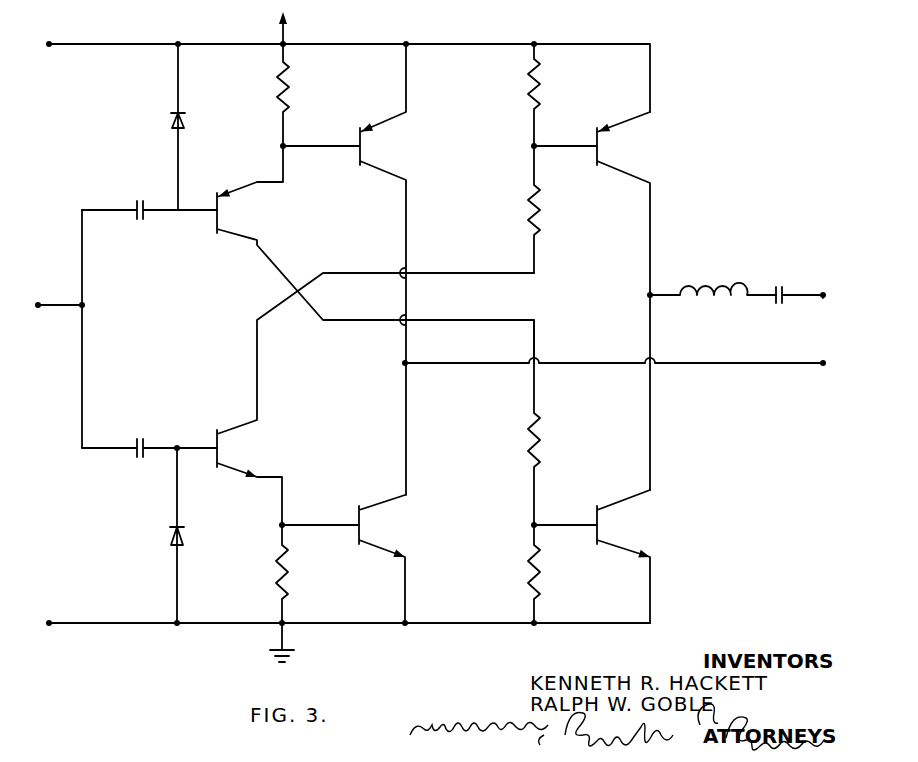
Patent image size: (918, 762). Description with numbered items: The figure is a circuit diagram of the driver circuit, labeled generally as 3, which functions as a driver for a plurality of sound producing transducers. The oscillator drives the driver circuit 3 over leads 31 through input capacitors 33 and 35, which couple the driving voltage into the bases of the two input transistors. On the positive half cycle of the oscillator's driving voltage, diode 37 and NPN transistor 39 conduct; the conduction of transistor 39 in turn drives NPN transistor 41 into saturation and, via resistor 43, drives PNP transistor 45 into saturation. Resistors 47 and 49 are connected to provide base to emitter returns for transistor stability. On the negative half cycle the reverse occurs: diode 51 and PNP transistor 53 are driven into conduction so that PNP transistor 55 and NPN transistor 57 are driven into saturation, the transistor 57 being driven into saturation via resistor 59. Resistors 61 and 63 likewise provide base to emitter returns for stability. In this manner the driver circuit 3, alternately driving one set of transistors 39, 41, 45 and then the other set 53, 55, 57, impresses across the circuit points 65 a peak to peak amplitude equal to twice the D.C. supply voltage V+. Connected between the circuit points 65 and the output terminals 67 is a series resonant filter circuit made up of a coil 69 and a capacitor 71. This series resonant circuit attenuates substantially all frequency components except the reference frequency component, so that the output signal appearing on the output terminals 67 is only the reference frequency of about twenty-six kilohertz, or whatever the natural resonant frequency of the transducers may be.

The power amplifier circuit 3 is at (88, 138).
The leads 31 is at (128, 18).
The input capacitor 33 is at (136, 219).
The input capacitor 35 is at (136, 438).
The diode 37 is at (175, 110).
The NPN transistor 39 is at (221, 448).
The NPN transistor 41 is at (363, 527).
The resistor 43 is at (538, 216).
The PNP transistor 45 is at (600, 150).
The resistor 47 is at (278, 580).
The resistor 49 is at (528, 92).
The diode 51 is at (172, 536).
The PNP transistor 53 is at (221, 214).
The PNP transistor 55 is at (363, 149).
The NPN transistor 57 is at (602, 528).
The resistor 59 is at (540, 442).
The resistor 61 is at (290, 108).
The resistor 63 is at (538, 574).
The circuit points 65 is at (412, 360).
The output terminals 67 is at (820, 302).
The coil 69 is at (712, 286).
The capacitor 71 is at (786, 292).